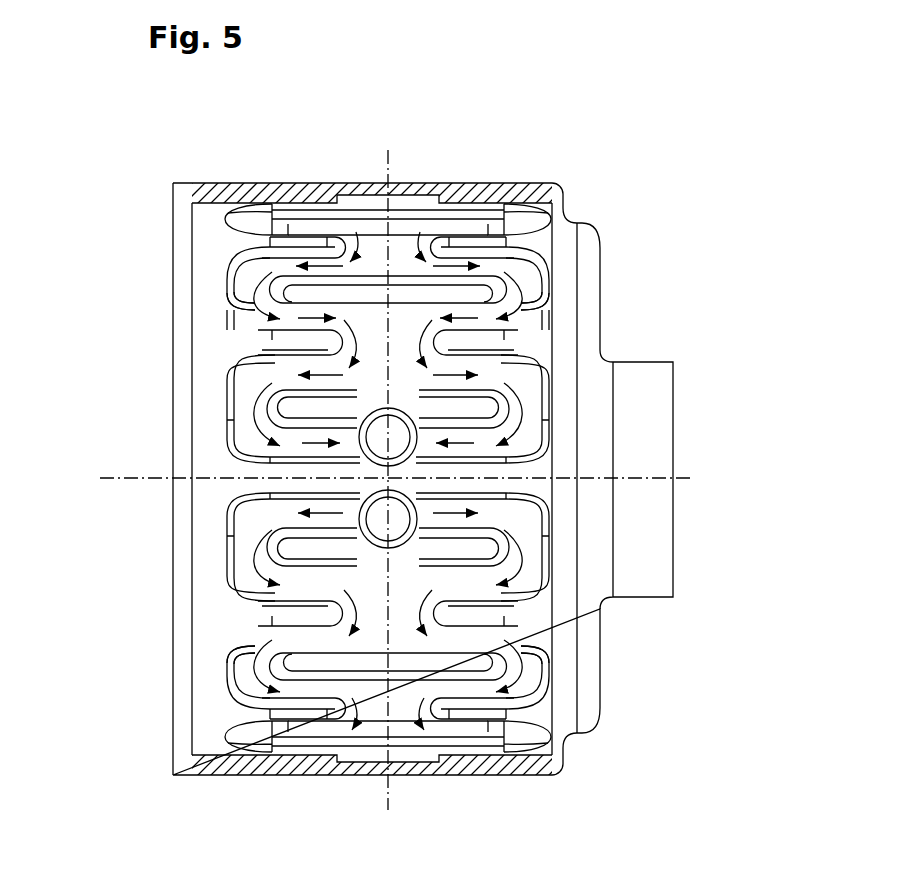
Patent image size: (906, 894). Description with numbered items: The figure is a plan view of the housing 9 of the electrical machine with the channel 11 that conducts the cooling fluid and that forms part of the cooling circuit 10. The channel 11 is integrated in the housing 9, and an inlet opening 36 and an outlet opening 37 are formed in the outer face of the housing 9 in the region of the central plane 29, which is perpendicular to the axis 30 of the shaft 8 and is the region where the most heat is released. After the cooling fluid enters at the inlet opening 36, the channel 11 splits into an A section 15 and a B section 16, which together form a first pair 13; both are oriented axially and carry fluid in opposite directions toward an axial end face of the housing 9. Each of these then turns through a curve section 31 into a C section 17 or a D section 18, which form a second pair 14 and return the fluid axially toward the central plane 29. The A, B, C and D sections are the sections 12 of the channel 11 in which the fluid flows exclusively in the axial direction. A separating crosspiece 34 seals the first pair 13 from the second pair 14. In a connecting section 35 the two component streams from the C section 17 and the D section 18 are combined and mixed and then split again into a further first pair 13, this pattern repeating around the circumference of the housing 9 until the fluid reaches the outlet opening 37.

The shaft 8 is at (648, 585).
The housing 9 is at (216, 740).
The cooling circuit 10 is at (634, 760).
The channel 11 is at (268, 520).
The sections 12 is at (325, 582).
The first pair 13 is at (205, 268).
The second pair 14 is at (205, 308).
The A section 15 is at (287, 262).
The B section 16 is at (489, 262).
The C section 17 is at (292, 322).
The D section 18 is at (500, 272).
The central plane 29 is at (389, 165).
The axis 30 is at (108, 478).
The curve section 31 is at (265, 410).
The separating crosspiece 34 is at (468, 288).
The connecting section 35 is at (372, 347).
The inlet opening 36 is at (397, 510).
The outlet opening 37 is at (392, 437).